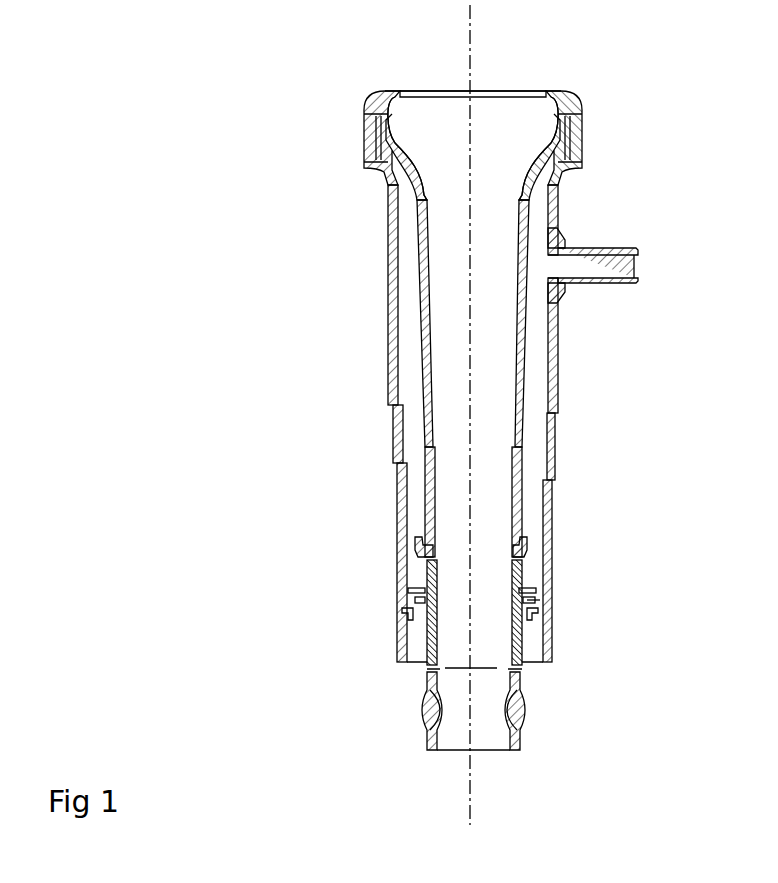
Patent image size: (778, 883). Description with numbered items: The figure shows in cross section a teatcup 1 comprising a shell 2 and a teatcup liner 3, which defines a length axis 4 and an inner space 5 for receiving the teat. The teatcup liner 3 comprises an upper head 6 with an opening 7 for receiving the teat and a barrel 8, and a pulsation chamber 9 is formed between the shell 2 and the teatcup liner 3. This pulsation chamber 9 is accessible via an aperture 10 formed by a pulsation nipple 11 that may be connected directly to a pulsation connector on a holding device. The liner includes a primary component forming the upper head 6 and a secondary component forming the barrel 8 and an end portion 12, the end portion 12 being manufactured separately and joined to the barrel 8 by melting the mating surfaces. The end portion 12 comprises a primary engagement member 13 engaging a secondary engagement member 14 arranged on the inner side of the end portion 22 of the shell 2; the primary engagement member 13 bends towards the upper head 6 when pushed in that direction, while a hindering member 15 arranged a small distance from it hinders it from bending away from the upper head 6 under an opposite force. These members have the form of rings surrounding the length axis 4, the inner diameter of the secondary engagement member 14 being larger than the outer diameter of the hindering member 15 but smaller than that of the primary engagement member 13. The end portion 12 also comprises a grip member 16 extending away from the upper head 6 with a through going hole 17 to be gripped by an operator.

The teatcup 1 is at (267, 322).
The shell 2 is at (552, 443).
The teatcup liner 3 is at (517, 405).
The length axis 4 is at (470, 13).
The inner space 5 is at (495, 337).
The upper head 6 is at (348, 115).
The opening 7 is at (507, 93).
The barrel 8 is at (433, 478).
The pulsation chamber 9 is at (424, 367).
The aperture 10 is at (552, 258).
The pulsation nipple 11 is at (615, 250).
The end portion 12 is at (522, 570).
The primary engagement member 13 is at (410, 592).
The secondary engagement member 14 is at (410, 615).
The hindering member 15 is at (530, 600).
The grip member 16 is at (430, 680).
The through going hole 17 is at (405, 727).
The end portion 22 is at (390, 603).